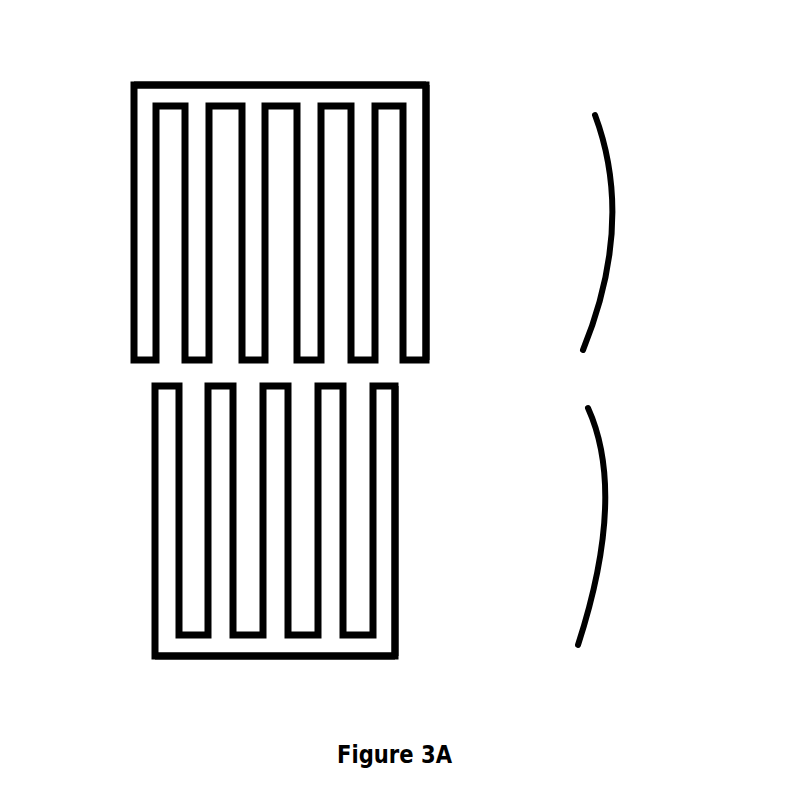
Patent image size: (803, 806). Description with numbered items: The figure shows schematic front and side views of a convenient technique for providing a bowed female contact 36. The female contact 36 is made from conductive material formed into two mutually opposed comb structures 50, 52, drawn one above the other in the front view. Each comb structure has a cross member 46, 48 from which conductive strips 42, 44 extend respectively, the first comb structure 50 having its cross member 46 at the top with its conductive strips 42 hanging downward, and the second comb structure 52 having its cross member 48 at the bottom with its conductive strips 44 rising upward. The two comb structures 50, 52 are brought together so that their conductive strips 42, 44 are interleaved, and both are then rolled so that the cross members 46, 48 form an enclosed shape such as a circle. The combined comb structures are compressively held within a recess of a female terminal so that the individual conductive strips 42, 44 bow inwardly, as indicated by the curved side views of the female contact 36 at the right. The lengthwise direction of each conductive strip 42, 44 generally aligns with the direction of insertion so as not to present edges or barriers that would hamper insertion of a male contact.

The female contact 36 is at (605, 145).
The conductive strips 42 is at (132, 217).
The conductive strips 44 is at (153, 493).
The cross member 46 is at (218, 82).
The cross member 48 is at (250, 650).
The comb structure 50 is at (452, 187).
The comb structure 52 is at (422, 503).